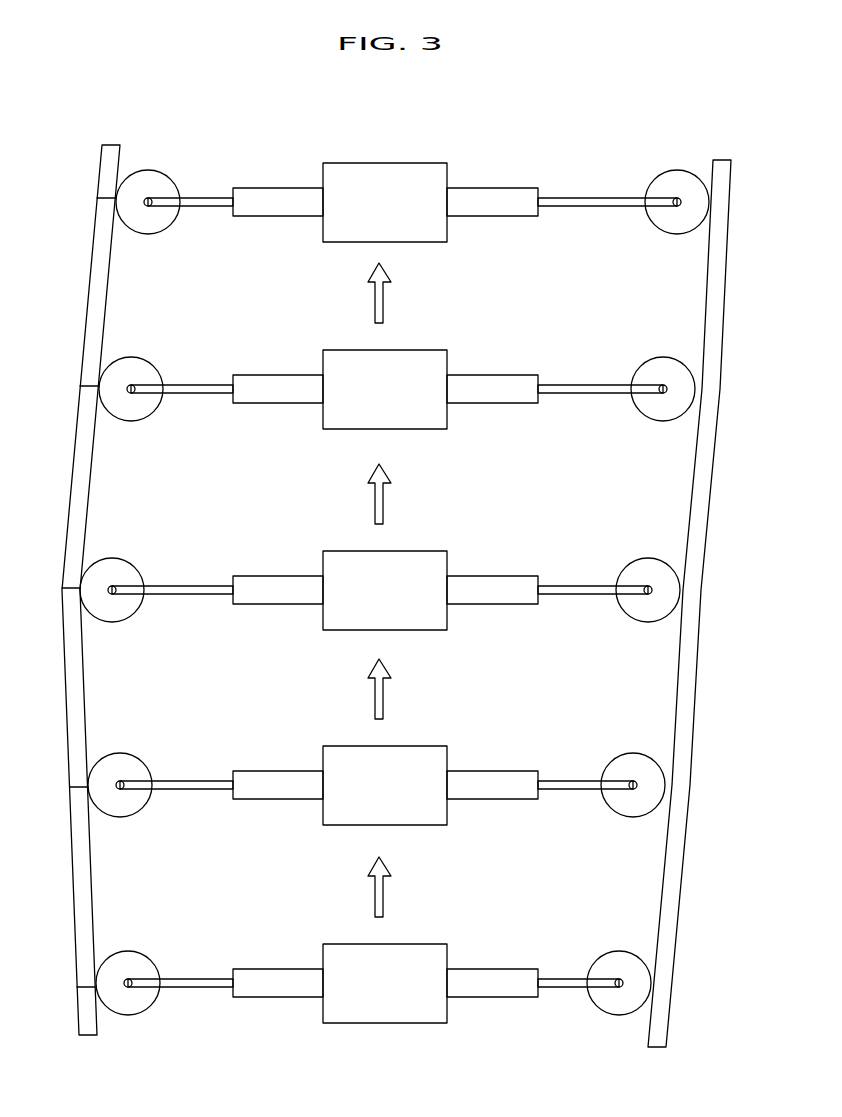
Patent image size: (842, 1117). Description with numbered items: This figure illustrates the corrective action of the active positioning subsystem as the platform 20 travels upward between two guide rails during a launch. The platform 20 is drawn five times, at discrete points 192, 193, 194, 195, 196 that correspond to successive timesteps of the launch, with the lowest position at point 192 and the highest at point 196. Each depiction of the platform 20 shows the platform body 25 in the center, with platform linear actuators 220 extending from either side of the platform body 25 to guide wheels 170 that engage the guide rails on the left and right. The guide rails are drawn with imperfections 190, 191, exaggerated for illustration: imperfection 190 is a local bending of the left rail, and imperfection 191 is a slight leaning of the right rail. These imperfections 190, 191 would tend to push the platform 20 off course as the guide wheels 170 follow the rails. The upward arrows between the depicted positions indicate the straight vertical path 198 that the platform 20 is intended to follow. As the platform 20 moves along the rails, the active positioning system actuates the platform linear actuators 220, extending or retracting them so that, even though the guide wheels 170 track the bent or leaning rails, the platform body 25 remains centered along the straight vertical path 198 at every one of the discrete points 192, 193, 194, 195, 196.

The platform 20 is at (250, 127).
The platform body 25 is at (352, 163).
The platform linear actuators 220 is at (273, 188).
The guide wheels 170 is at (171, 226).
The straight vertical path 198 is at (383, 300).
The imperfection 190 is at (62, 588).
The imperfection 191 is at (722, 160).
The discrete point 192 is at (77, 987).
The discrete point 193 is at (70, 787).
The discrete point 194 is at (62, 598).
The discrete point 195 is at (80, 386).
The discrete point 196 is at (97, 198).